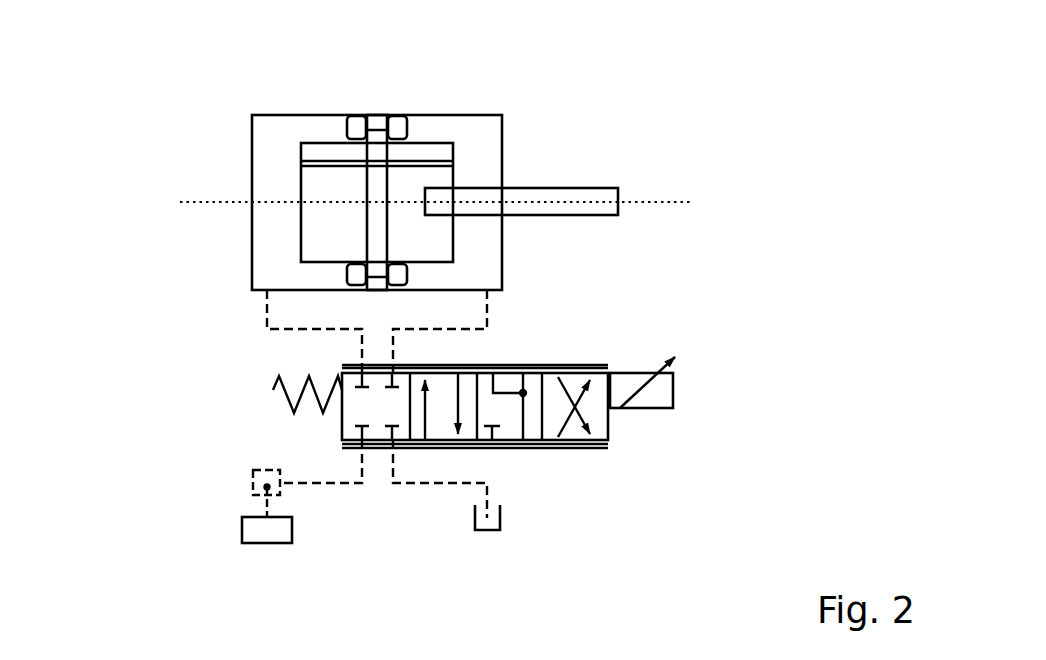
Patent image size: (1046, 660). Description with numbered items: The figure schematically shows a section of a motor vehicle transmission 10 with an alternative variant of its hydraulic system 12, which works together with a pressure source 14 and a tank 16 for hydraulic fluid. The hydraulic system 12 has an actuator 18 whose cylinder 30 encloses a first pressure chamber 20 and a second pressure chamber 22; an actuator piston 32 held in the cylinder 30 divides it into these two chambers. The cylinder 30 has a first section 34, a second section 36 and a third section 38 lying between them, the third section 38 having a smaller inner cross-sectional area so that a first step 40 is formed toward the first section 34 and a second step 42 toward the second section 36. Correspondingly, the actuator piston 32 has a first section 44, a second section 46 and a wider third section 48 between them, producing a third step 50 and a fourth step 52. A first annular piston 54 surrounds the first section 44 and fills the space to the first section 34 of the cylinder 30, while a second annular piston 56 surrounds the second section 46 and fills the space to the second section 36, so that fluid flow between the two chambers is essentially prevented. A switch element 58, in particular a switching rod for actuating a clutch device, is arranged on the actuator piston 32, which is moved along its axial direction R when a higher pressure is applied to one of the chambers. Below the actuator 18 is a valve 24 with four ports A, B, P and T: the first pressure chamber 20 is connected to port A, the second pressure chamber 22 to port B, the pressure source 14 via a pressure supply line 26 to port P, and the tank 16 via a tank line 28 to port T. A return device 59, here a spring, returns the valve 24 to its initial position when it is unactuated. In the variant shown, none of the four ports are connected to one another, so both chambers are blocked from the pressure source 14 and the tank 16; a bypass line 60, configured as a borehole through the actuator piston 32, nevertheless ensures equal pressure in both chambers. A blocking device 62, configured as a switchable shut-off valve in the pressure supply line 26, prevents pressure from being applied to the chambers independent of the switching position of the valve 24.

The motor vehicle transmission 10 is at (712, 92).
The hydraulic system 12 is at (113, 313).
The pressure source 14 is at (265, 537).
The tank 16 is at (493, 530).
The actuator 18 is at (308, 146).
The first pressure chamber 20 is at (263, 130).
The second pressure chamber 22 is at (488, 147).
The valve 24 is at (640, 445).
The pressure supply line 26 is at (313, 483).
The tank line 28 is at (440, 483).
The cylinder 30 is at (598, 195).
The actuator piston 32 is at (385, 168).
The first section of the cylinder 34 is at (293, 295).
The second section of the cylinder 36 is at (465, 295).
The third section of the cylinder 38 is at (375, 297).
The first step 40 is at (357, 293).
The second step 42 is at (393, 293).
The first section of the actuator piston 44 is at (330, 242).
The second section of the actuator piston 46 is at (435, 245).
The third section of the actuator piston 48 is at (377, 188).
The third step 50 is at (367, 185).
The fourth step 52 is at (428, 180).
The first annular piston 54 is at (387, 167).
The second annular piston 56 is at (367, 167).
The switch element 58 is at (503, 170).
The return device 59 is at (283, 398).
The bypass line 60 is at (465, 162).
The blocking device 62 is at (253, 490).
The axial direction R is at (650, 201).